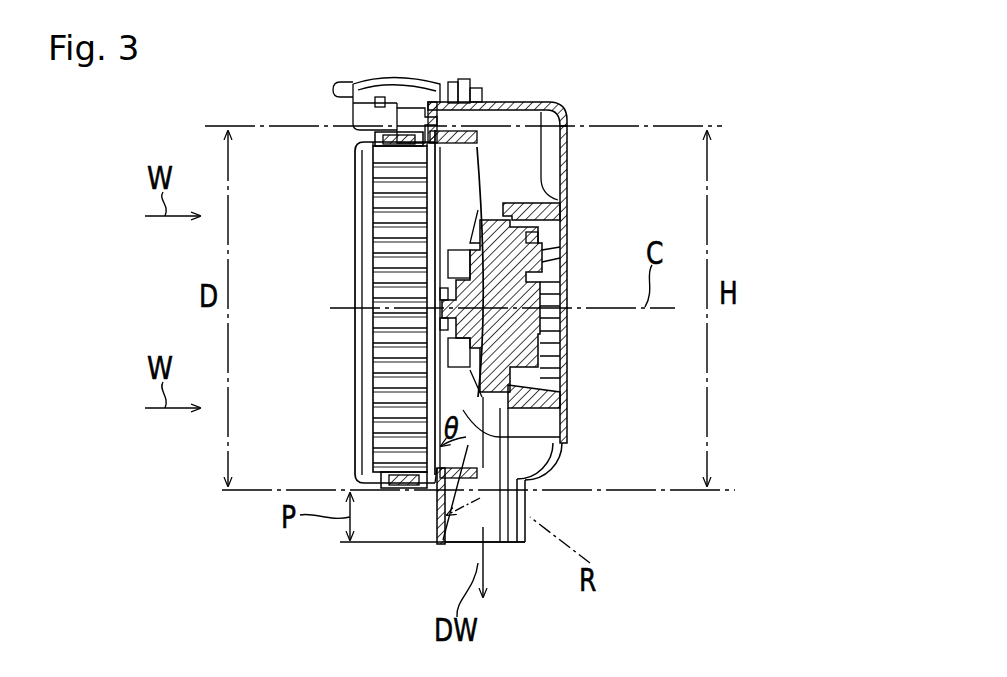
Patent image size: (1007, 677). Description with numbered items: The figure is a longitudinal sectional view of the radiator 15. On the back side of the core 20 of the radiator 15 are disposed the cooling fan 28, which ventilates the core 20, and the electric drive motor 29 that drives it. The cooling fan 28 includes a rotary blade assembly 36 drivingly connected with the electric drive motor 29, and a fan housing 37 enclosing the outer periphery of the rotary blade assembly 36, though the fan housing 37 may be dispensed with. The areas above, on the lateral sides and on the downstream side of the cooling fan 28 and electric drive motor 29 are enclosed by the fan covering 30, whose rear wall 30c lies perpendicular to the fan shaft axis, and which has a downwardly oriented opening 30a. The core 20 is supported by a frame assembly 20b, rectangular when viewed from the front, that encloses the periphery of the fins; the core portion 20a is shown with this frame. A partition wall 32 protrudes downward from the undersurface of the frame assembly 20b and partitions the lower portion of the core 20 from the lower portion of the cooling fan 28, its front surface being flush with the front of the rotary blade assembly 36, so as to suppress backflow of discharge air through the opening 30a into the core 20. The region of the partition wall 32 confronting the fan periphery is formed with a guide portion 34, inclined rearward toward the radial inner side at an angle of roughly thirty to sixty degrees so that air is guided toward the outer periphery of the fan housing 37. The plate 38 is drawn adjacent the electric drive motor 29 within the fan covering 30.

The radiator 15 is at (368, 327).
The core 20 is at (287, 175).
The stator core 20a is at (387, 238).
The frame assembly 20b is at (398, 148).
The cooling fan 28 is at (467, 162).
The electric drive motor 29 is at (507, 260).
The fan covering 30 is at (553, 112).
The opening 30a is at (503, 542).
The rear wall 30c is at (567, 148).
The partition wall 32 is at (445, 540).
The guide portion 34 is at (438, 497).
The rotary blade assembly 36 is at (553, 441).
The fan housing 37 is at (525, 487).
The plate 38 is at (567, 383).